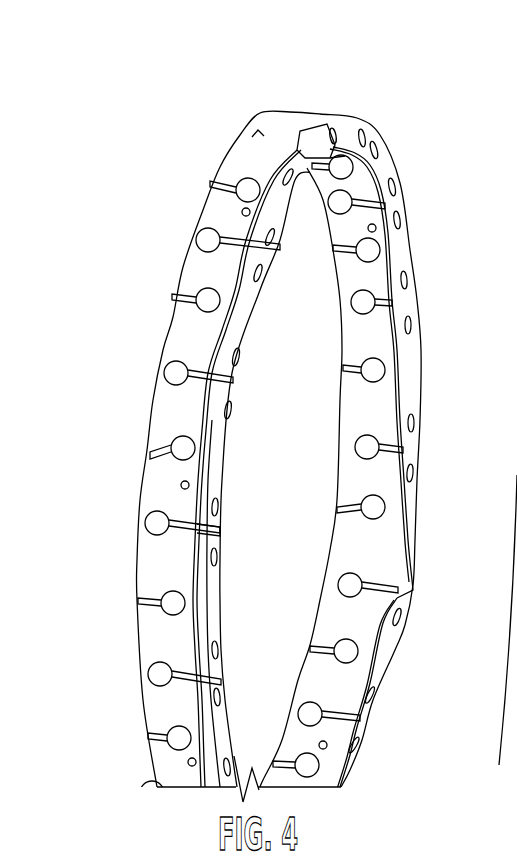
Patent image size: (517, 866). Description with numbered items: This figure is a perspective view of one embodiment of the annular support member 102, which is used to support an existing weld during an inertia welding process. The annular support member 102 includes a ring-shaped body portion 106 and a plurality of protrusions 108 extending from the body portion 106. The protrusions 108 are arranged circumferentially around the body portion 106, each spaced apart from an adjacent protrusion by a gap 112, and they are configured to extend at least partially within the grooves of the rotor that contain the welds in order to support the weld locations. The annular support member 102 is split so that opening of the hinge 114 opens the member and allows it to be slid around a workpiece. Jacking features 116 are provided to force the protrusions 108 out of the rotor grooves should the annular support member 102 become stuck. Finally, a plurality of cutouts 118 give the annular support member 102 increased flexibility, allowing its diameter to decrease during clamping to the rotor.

The annular support member 102 is at (106, 263).
The ring-shaped body portion 106 is at (265, 162).
The protrusions 108 is at (243, 323).
The gap 112 is at (197, 538).
The hinge 114 is at (288, 163).
The jacking features 116 is at (178, 488).
The cutouts 118 is at (170, 456).